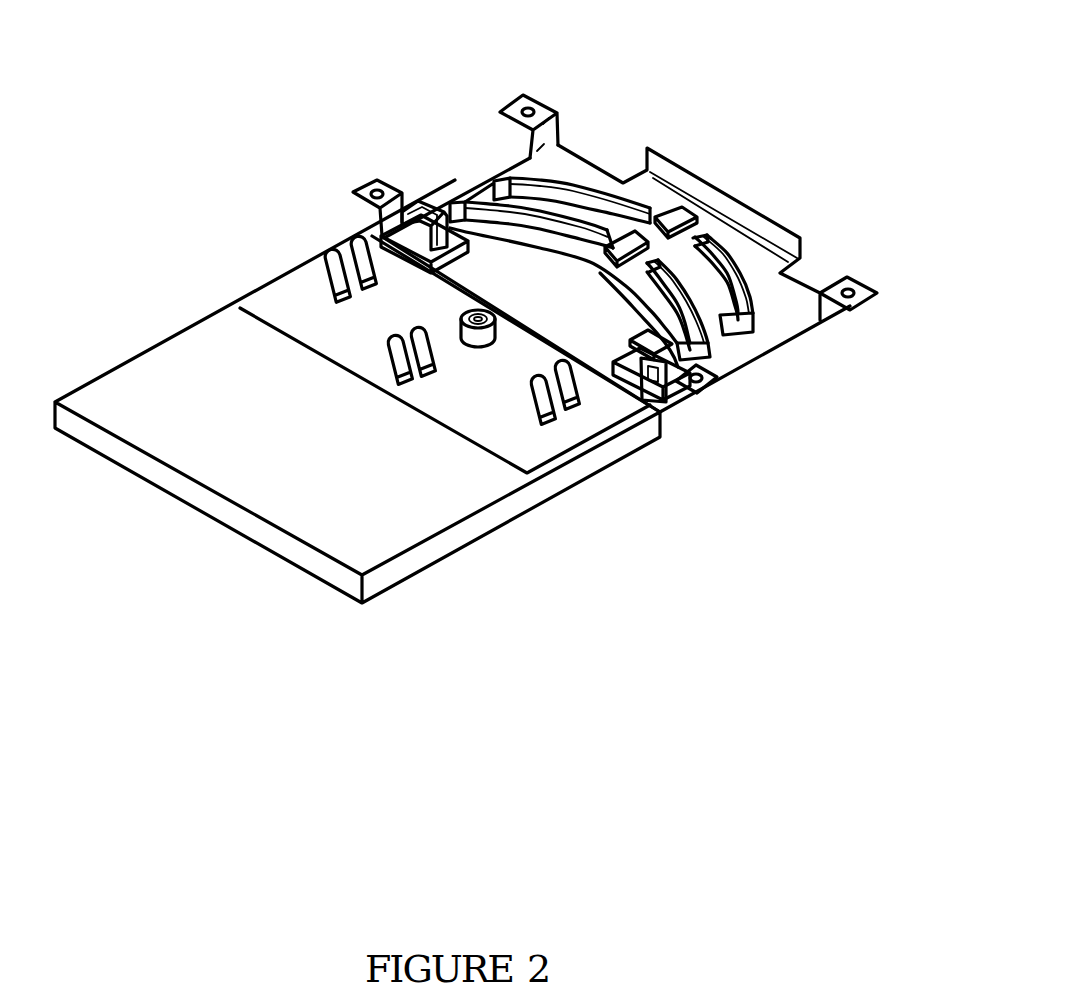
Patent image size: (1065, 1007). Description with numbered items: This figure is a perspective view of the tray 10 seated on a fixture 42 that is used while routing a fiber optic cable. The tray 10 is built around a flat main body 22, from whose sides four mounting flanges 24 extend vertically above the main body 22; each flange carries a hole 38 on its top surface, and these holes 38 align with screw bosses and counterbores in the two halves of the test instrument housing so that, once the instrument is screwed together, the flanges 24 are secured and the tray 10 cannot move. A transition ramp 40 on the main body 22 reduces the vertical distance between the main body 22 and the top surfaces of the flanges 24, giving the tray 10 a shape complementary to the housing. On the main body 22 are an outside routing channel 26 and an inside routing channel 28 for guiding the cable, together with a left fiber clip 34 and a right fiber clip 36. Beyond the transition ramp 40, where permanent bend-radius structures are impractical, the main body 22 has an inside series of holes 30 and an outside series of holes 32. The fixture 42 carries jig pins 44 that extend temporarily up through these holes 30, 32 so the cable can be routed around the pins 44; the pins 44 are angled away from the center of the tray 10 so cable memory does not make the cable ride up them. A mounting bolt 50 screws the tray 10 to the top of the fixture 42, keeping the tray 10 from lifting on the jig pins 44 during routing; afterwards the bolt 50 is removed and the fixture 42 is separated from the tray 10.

The tray 10 is at (747, 178).
The main body 22 is at (795, 333).
The mounting flanges 24 is at (547, 122).
The outside routing channel 26 is at (587, 182).
The inside routing channel 28 is at (712, 332).
The inside series of holes 30 is at (348, 232).
The outside series of holes 32 is at (327, 300).
The left fiber clip 34 is at (437, 200).
The right fiber clip 36 is at (670, 415).
The holes 38 is at (528, 94).
The transition ramp 40 is at (387, 308).
The fixture 42 is at (183, 513).
The jig pins 44 is at (345, 235).
The mounting bolt 50 is at (495, 308).